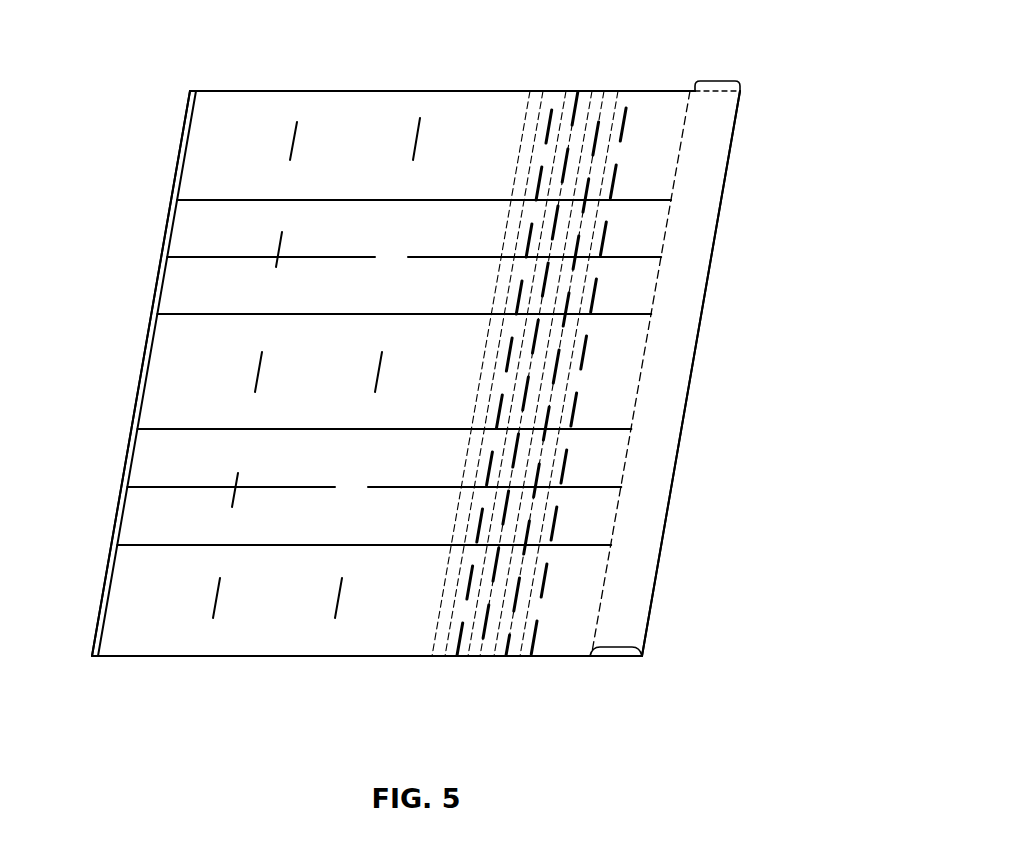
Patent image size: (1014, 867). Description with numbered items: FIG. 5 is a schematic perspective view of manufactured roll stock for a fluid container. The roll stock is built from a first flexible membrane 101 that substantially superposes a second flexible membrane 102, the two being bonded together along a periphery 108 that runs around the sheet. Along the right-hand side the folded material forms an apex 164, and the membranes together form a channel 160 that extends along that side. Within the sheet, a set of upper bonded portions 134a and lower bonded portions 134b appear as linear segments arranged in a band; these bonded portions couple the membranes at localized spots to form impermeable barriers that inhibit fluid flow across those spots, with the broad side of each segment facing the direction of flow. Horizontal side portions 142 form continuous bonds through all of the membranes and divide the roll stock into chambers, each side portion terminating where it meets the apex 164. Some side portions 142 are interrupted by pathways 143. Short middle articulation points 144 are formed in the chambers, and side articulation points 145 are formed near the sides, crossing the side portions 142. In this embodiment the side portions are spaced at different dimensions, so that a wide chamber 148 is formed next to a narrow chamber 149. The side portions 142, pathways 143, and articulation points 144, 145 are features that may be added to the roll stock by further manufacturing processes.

The first flexible membrane 101 is at (155, 657).
The second flexible membrane 102 is at (296, 662).
The periphery 108 is at (335, 91).
The upper bonded portions 134a is at (547, 127).
The lower bonded portions 134b is at (500, 265).
The side portions 142 is at (388, 200).
The pathways 143 is at (386, 252).
The middle articulation points 144 is at (296, 124).
The side articulation points 145 is at (280, 244).
The wide chamber 148 is at (262, 579).
The narrow chamber 149 is at (262, 534).
The channel 160 is at (627, 608).
The apex 164 is at (677, 177).